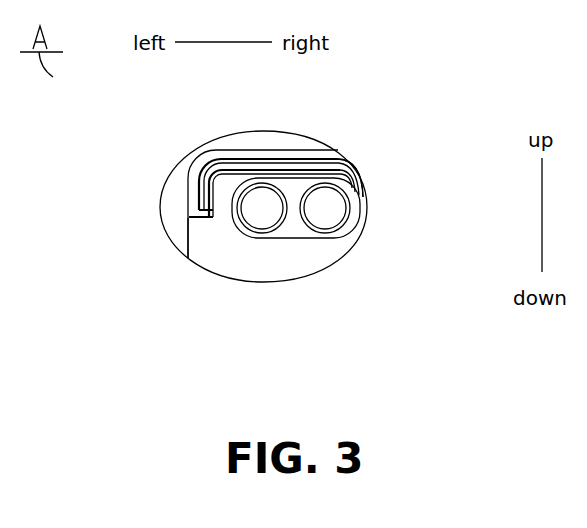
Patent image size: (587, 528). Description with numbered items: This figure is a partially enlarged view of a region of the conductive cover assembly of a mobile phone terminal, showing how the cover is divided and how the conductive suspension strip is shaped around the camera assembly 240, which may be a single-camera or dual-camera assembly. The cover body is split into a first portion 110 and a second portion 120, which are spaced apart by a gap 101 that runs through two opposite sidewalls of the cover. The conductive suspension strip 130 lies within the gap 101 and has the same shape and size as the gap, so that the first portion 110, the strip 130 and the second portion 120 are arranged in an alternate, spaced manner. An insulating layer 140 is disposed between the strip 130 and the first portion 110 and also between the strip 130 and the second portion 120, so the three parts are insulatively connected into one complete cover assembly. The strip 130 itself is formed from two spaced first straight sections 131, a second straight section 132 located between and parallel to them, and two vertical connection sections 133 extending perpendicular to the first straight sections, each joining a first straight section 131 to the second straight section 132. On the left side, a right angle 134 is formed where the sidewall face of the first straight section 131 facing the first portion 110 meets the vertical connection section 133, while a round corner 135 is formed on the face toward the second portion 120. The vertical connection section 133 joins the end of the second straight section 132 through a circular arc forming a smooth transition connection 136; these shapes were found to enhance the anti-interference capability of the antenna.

The first portion 110 is at (331, 158).
The second portion 120 is at (248, 263).
The conductive suspension strip 130 is at (182, 187).
The first straight section 131 is at (189, 218).
The second straight section 132 is at (237, 152).
The vertical connection section 133 is at (203, 190).
The right angle 134 is at (207, 200).
The round corner 135 is at (141, 252).
The smooth transition connection 136 is at (195, 165).
The insulating layer 140 is at (283, 165).
The gap 101 is at (419, 159).
The camera assembly 240 is at (290, 228).